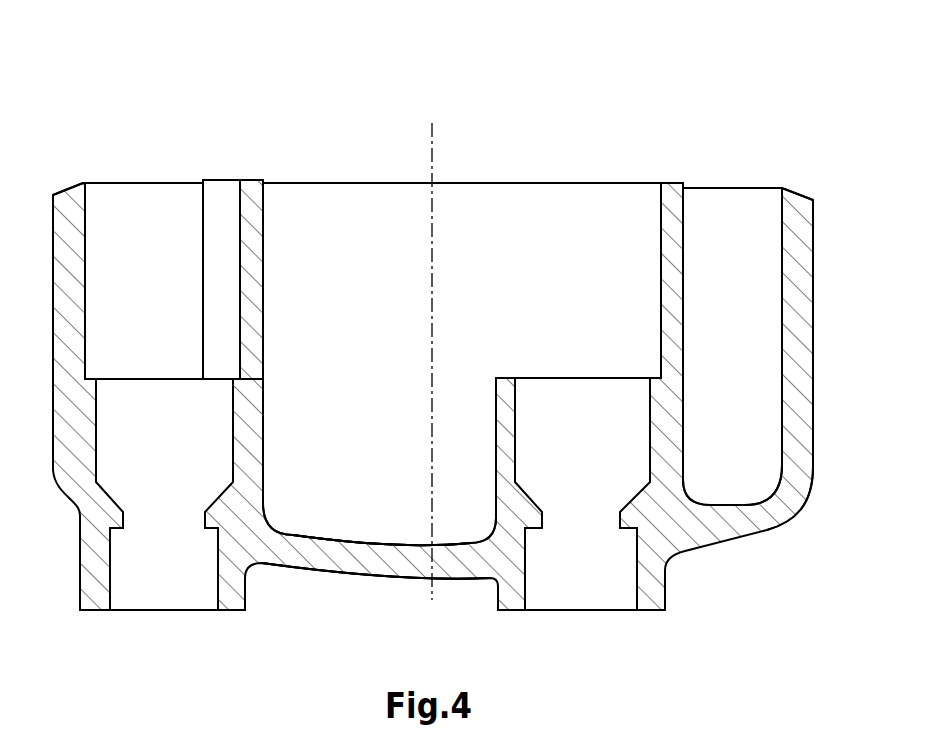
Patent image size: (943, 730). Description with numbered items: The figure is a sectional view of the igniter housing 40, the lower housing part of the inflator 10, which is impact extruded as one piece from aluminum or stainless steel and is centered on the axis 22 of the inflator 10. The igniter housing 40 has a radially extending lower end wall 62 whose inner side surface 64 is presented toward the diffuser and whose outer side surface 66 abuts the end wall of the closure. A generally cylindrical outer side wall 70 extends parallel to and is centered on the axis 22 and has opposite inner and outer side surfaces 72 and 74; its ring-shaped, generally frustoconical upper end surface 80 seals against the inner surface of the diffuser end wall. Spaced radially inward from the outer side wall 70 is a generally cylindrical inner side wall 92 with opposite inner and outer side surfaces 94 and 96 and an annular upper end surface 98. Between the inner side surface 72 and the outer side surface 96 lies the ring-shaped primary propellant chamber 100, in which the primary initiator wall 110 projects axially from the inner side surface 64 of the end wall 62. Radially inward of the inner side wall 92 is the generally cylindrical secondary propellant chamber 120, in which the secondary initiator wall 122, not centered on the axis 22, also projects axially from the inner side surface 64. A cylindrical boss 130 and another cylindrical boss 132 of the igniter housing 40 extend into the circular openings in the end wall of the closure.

The inflator 10 is at (493, 110).
The axis 22 is at (432, 153).
The igniter housing 40 is at (575, 147).
The lower end wall 62 is at (363, 578).
The inner side surface 64 is at (313, 532).
The outer side surface 66 is at (318, 572).
The outer side wall 70 is at (813, 297).
The inner side surface 72 is at (782, 358).
The outer side surface 74 is at (813, 382).
The upper end surface 80 is at (73, 193).
The inner side wall 92 is at (263, 296).
The inner side surface 94 is at (263, 238).
The outer side surface 96 is at (223, 198).
The annular upper end surface 98 is at (250, 198).
The primary propellant chamber 100 is at (160, 338).
The primary initiator wall 110 is at (97, 433).
The secondary propellant chamber 120 is at (373, 416).
The secondary initiator wall 122 is at (496, 426).
The cylindrical boss 130 is at (92, 612).
The cylindrical boss 132 is at (647, 612).